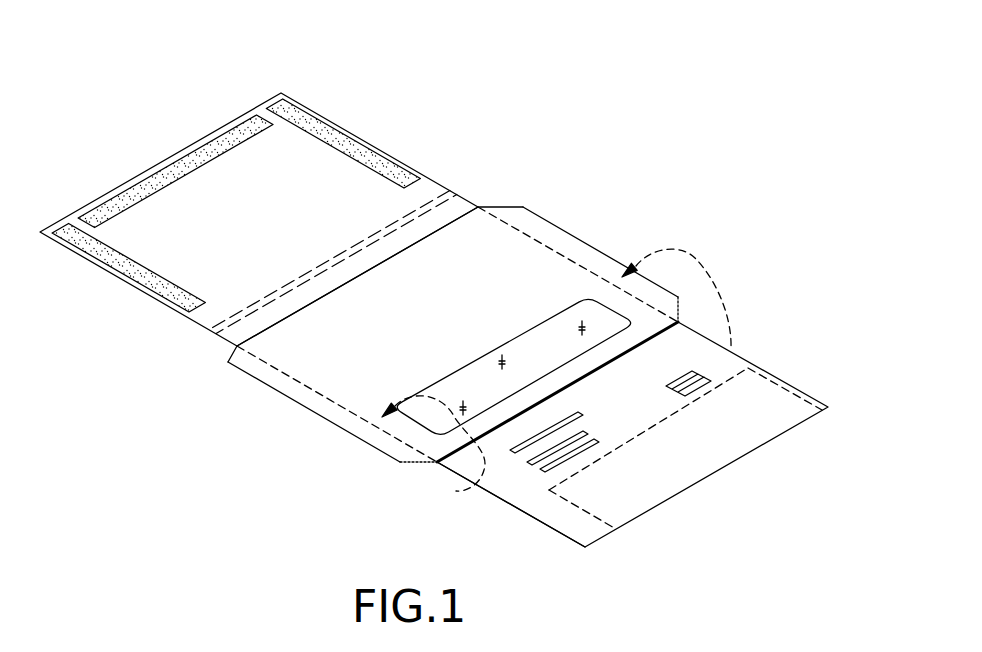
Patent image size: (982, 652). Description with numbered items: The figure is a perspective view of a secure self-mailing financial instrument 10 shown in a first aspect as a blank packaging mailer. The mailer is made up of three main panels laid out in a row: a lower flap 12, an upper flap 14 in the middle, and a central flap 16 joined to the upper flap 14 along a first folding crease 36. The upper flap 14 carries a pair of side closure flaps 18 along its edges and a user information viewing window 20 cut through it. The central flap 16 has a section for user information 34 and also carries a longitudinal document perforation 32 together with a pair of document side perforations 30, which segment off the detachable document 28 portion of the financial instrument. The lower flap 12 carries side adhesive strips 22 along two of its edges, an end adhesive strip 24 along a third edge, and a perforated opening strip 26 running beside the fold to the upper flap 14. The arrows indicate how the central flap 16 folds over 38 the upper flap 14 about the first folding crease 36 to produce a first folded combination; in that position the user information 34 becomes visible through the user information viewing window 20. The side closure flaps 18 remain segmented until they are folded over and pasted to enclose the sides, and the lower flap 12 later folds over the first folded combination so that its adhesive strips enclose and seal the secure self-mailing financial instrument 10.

The secure self-mailing financial instrument 10 is at (528, 44).
The lower flap 12 is at (120, 279).
The upper flap 14 is at (467, 301).
The central flap 16 is at (530, 517).
The side closure flaps 18 is at (580, 240).
The user information viewing window 20 is at (472, 372).
The side adhesive strips 22 is at (345, 138).
The end adhesive strip 24 is at (178, 166).
The perforated opening strip 26 is at (340, 253).
The document 28 is at (685, 482).
The pair of document side perforations 30 is at (778, 375).
The longitudinal document perforation 32 is at (680, 420).
The user information 34 is at (575, 450).
The first folding crease 36 is at (578, 379).
The folding over 38 is at (690, 257).